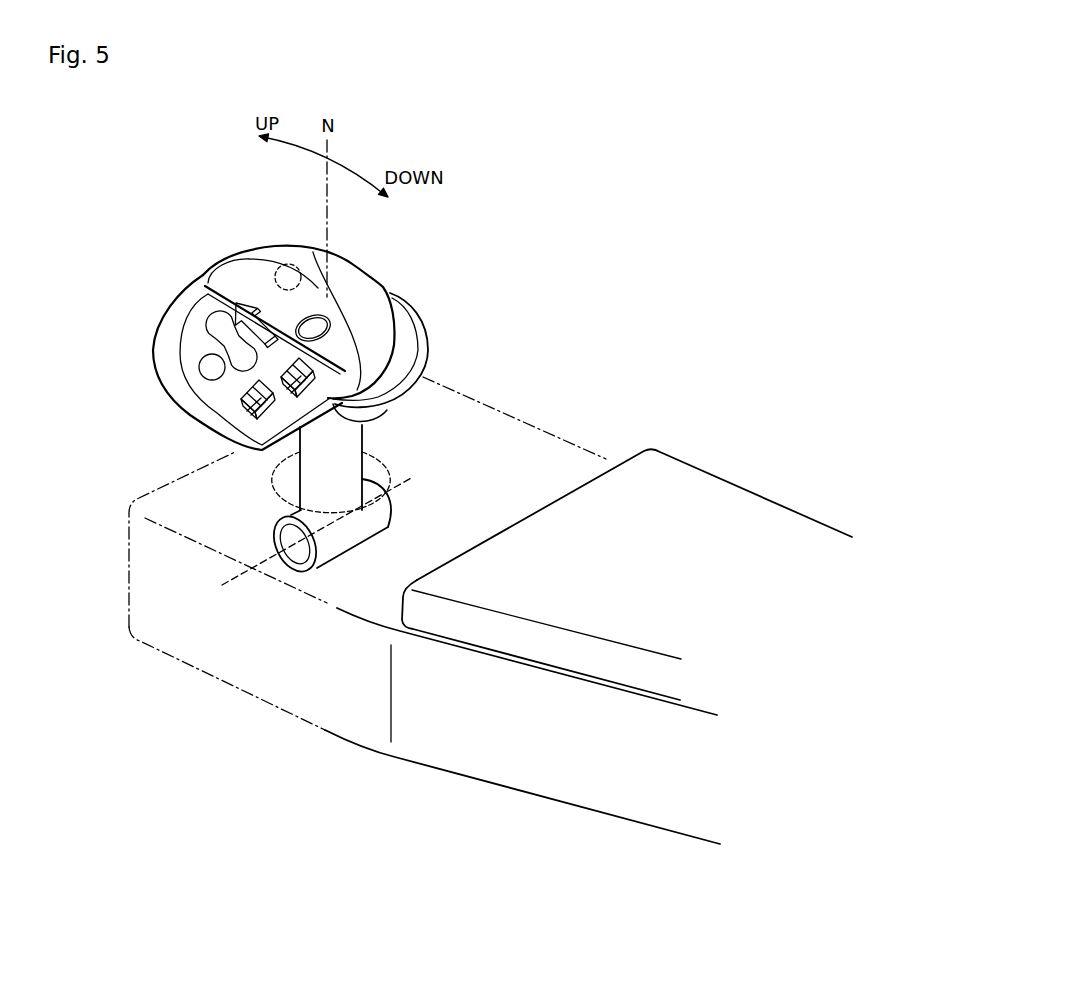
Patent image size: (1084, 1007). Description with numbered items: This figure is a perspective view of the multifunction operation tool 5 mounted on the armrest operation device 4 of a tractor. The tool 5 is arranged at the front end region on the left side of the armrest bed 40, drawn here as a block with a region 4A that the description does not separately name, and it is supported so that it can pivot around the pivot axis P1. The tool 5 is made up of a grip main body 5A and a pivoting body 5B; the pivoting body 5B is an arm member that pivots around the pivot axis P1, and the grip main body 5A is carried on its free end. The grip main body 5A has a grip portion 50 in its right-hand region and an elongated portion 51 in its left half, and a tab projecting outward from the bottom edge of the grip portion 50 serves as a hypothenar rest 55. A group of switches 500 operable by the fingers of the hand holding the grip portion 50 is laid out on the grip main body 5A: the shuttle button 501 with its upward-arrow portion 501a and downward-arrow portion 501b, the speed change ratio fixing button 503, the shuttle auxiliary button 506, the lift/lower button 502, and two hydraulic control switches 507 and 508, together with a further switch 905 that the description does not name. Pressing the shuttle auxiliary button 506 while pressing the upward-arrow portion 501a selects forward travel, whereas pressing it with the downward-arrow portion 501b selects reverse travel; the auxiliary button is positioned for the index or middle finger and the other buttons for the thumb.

The base unit 4 is at (490, 564).
The armrest bed 40 is at (754, 508).
The front surface of base unit 4A is at (522, 754).
The multifunction operation tool 5 is at (104, 240).
The grip main body 5A is at (315, 330).
The pivoting body 5B is at (307, 505).
The grip portion 50 is at (304, 305).
The elongated portion 51 is at (220, 372).
The hypothenar rest 55 is at (412, 338).
The group of switches 500 is at (198, 338).
The shuttle button 501 is at (248, 290).
The upward-arrow portion 501a is at (213, 316).
The downward-arrow portion 501b is at (313, 253).
The lift/lower button 502 is at (200, 318).
The speed change ratio fixing button 503 is at (207, 381).
The shuttle auxiliary button 506 is at (271, 262).
The hydraulic control switch 507 is at (325, 400).
The hydraulic control switch 508 is at (245, 438).
The oval mark 905 is at (333, 330).
The pivot axis P1 is at (226, 583).